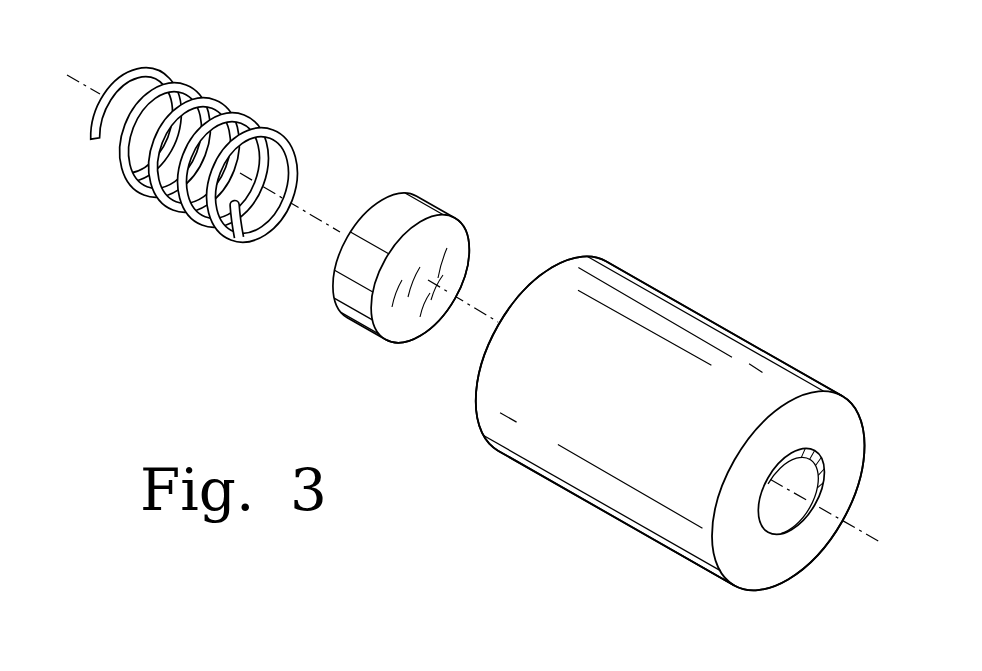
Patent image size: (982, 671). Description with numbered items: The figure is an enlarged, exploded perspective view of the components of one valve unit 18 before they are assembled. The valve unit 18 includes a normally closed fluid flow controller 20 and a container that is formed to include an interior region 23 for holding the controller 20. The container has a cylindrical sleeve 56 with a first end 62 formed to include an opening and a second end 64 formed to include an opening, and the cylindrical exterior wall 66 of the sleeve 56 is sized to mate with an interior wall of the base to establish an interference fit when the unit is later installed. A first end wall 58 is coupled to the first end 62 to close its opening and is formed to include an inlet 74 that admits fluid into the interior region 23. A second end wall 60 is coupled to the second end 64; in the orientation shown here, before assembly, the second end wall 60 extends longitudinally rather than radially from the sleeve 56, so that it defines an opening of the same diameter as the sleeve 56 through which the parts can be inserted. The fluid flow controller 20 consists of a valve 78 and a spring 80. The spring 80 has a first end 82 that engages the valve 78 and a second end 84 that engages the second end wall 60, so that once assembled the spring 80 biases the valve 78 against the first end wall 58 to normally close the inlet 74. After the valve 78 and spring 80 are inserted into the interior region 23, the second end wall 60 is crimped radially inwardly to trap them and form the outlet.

The valve unit 18 is at (491, 334).
The fluid flow controller 20 is at (283, 213).
The interior region 23 is at (820, 458).
The cylindrical sleeve 56 is at (696, 301).
The first end wall 58 is at (744, 572).
The second end wall 60 is at (500, 377).
The first end 62 is at (707, 553).
The second end 64 is at (538, 466).
The cylindrical exterior wall 66 is at (663, 445).
The inlet 74 is at (792, 516).
The valve 78 is at (400, 323).
The spring 80 is at (219, 138).
The first end 82 is at (293, 151).
The second end 84 is at (138, 70).